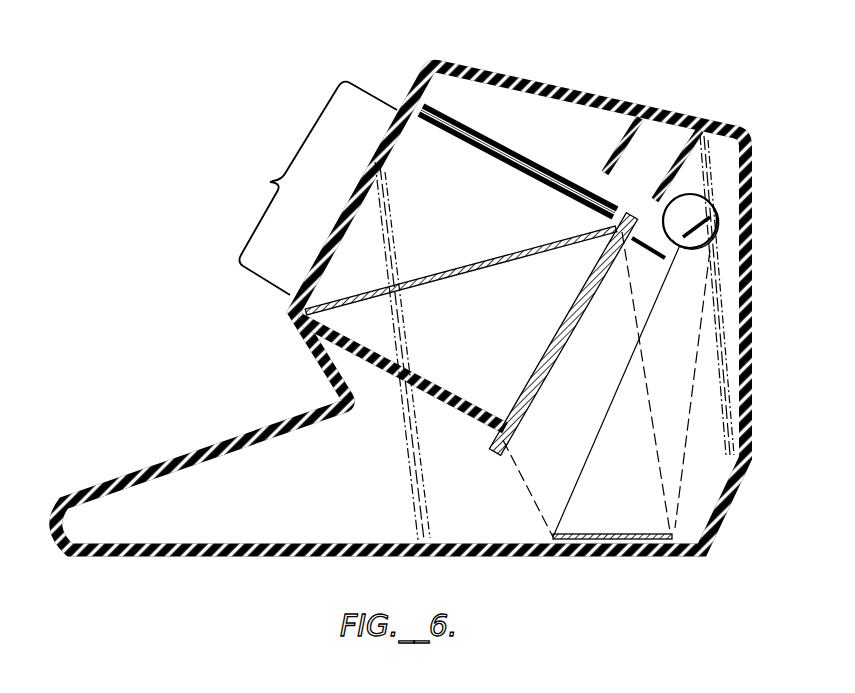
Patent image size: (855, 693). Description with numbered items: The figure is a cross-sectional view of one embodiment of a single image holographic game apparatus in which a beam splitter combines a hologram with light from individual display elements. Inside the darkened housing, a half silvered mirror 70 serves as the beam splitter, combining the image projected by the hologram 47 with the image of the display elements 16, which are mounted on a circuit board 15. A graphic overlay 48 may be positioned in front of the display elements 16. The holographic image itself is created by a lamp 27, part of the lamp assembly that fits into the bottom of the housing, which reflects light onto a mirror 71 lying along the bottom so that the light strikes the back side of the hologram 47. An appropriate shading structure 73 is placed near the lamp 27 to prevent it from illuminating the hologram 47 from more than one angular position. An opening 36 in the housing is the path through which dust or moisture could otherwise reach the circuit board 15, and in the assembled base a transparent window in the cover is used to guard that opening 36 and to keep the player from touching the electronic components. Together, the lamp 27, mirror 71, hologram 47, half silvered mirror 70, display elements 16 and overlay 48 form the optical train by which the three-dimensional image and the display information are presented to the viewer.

The circuit board 15 is at (490, 150).
The display elements 16 is at (588, 204).
The lamp 27 is at (716, 217).
The opening 36 is at (314, 188).
The hologram 47 is at (535, 392).
The graphic overlay 48 is at (487, 157).
The half silvered mirror 70 is at (337, 302).
The mirror 71 is at (609, 535).
The shading structure 73 is at (655, 258).